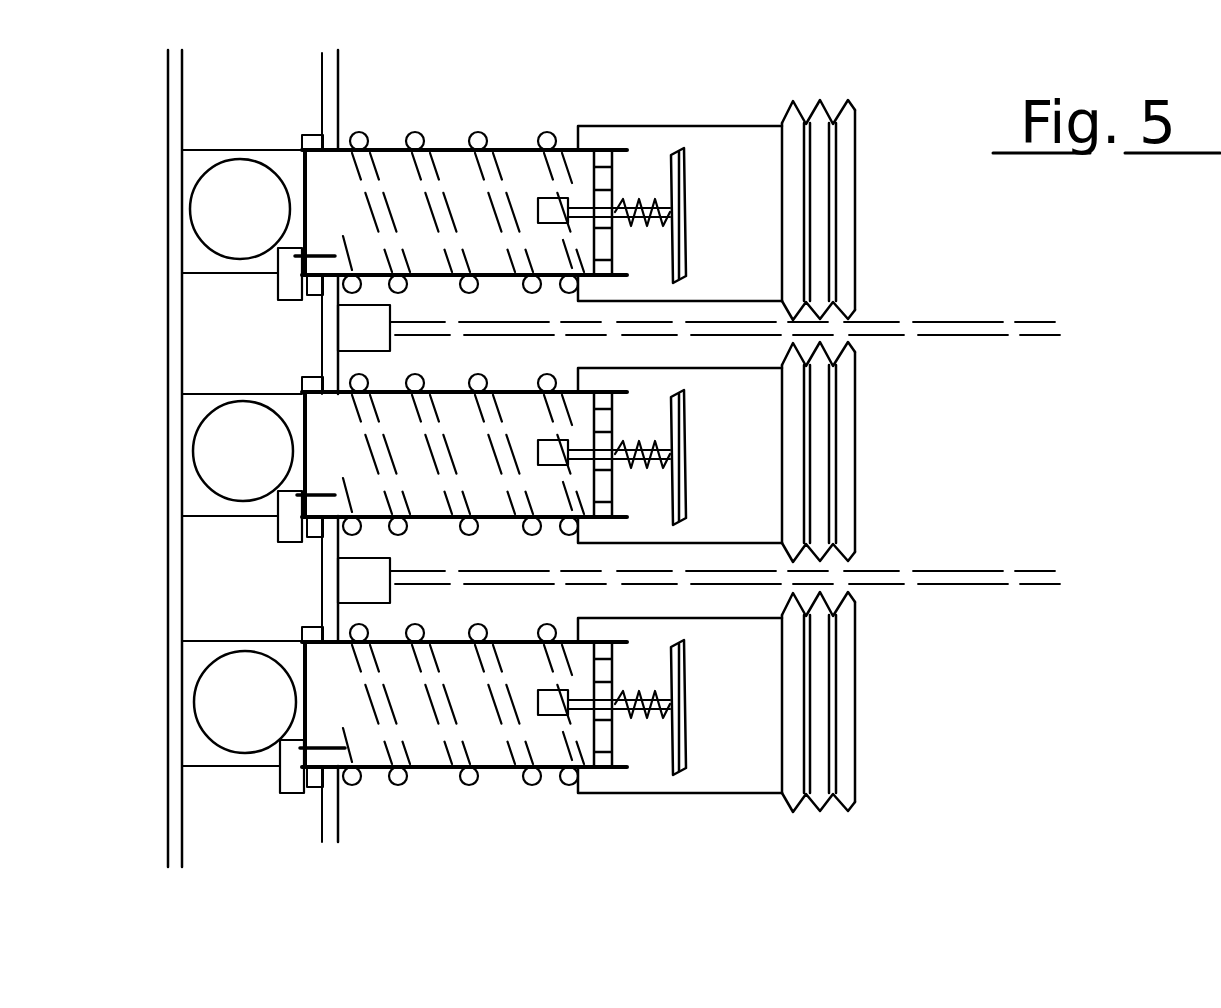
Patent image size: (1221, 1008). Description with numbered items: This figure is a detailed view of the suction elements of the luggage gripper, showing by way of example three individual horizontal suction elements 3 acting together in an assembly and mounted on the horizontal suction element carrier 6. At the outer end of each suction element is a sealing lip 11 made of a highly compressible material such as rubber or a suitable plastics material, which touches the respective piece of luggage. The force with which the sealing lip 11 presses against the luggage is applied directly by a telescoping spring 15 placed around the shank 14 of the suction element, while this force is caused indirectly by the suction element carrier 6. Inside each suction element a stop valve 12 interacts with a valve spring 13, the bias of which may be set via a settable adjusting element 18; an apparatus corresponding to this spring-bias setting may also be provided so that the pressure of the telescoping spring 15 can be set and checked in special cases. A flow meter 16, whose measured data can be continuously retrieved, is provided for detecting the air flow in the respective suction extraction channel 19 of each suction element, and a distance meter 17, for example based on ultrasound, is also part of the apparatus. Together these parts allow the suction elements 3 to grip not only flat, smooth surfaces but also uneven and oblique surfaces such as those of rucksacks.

The horizontal suction element 3 is at (697, 792).
The suction element carrier 6 is at (333, 837).
The sealing lip 11 is at (842, 747).
The stop valve 12 is at (670, 700).
The valve spring 13 is at (647, 680).
The shank 14 is at (507, 640).
The telescoping spring 15 is at (540, 782).
The flow meter 16 is at (290, 773).
The distance meter 17 is at (365, 590).
The adjusting element 18 is at (570, 210).
The suction extraction channel 19 is at (247, 204).